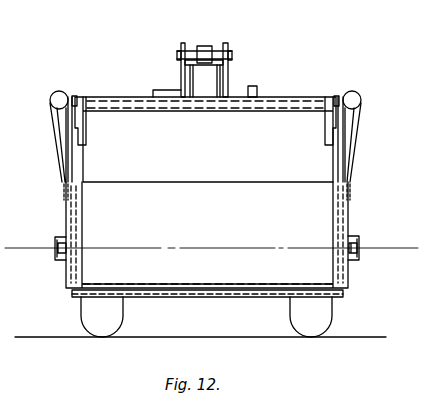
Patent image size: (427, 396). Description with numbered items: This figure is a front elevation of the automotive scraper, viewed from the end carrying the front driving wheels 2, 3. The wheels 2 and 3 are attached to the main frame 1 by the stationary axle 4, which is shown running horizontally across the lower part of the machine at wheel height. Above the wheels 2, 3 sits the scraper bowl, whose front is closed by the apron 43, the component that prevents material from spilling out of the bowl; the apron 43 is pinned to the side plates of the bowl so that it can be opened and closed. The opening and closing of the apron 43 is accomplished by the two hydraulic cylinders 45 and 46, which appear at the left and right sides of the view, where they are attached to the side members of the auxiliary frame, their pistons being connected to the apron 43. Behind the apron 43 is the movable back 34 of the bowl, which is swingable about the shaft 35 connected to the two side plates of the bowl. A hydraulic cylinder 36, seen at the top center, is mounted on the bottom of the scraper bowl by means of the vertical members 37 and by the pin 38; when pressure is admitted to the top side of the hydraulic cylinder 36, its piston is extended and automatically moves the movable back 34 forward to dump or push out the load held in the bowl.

The main frame 1 is at (56, 236).
The front driving wheel 2 is at (329, 308).
The front driving wheel 3 is at (89, 312).
The stationary axle 4 is at (359, 249).
The movable back 34 is at (208, 139).
The shaft 35 is at (114, 109).
The hydraulic cylinder 36 is at (219, 80).
The vertical members 37 is at (225, 43).
The pin 38 is at (232, 54).
The apron 43 is at (207, 235).
The hydraulic cylinder 45 is at (358, 94).
The hydraulic cylinder 46 is at (55, 96).